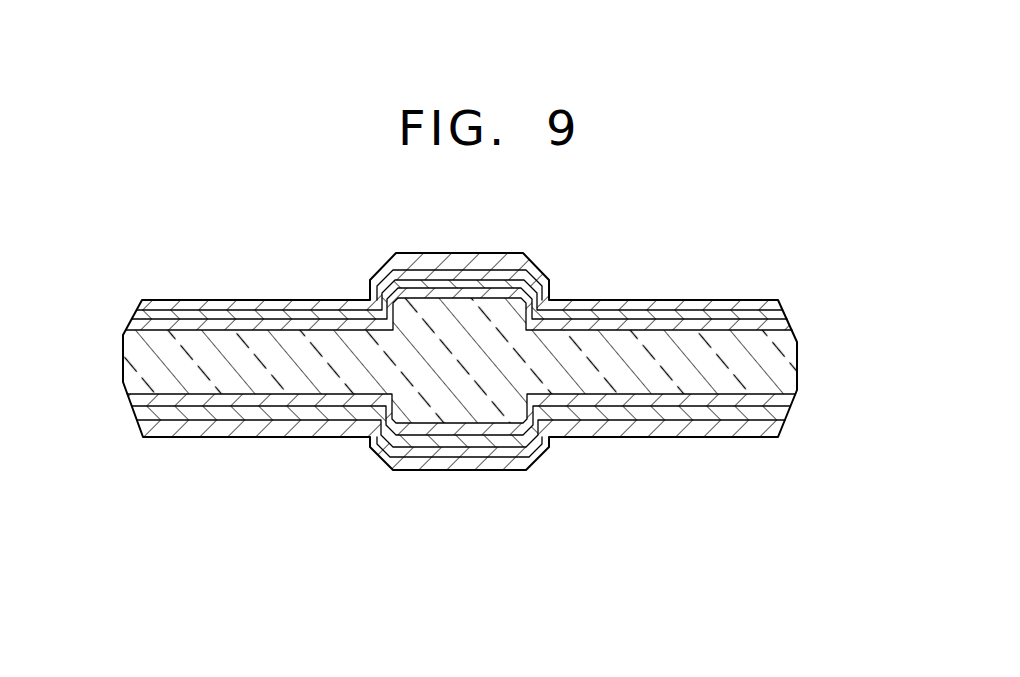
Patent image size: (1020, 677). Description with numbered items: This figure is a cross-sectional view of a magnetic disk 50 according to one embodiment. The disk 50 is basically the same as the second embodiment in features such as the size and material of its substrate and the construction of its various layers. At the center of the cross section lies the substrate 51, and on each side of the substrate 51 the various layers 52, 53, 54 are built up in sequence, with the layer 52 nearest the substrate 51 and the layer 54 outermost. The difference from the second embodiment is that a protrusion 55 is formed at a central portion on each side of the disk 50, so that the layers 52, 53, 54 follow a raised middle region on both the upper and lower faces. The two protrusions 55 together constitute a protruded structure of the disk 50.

The magnetic disk 50 is at (130, 307).
The substrate 51 is at (787, 363).
The layer 52 is at (786, 327).
The layer 53 is at (780, 311).
The layer 54 is at (725, 301).
The protrusion 55 is at (494, 253).